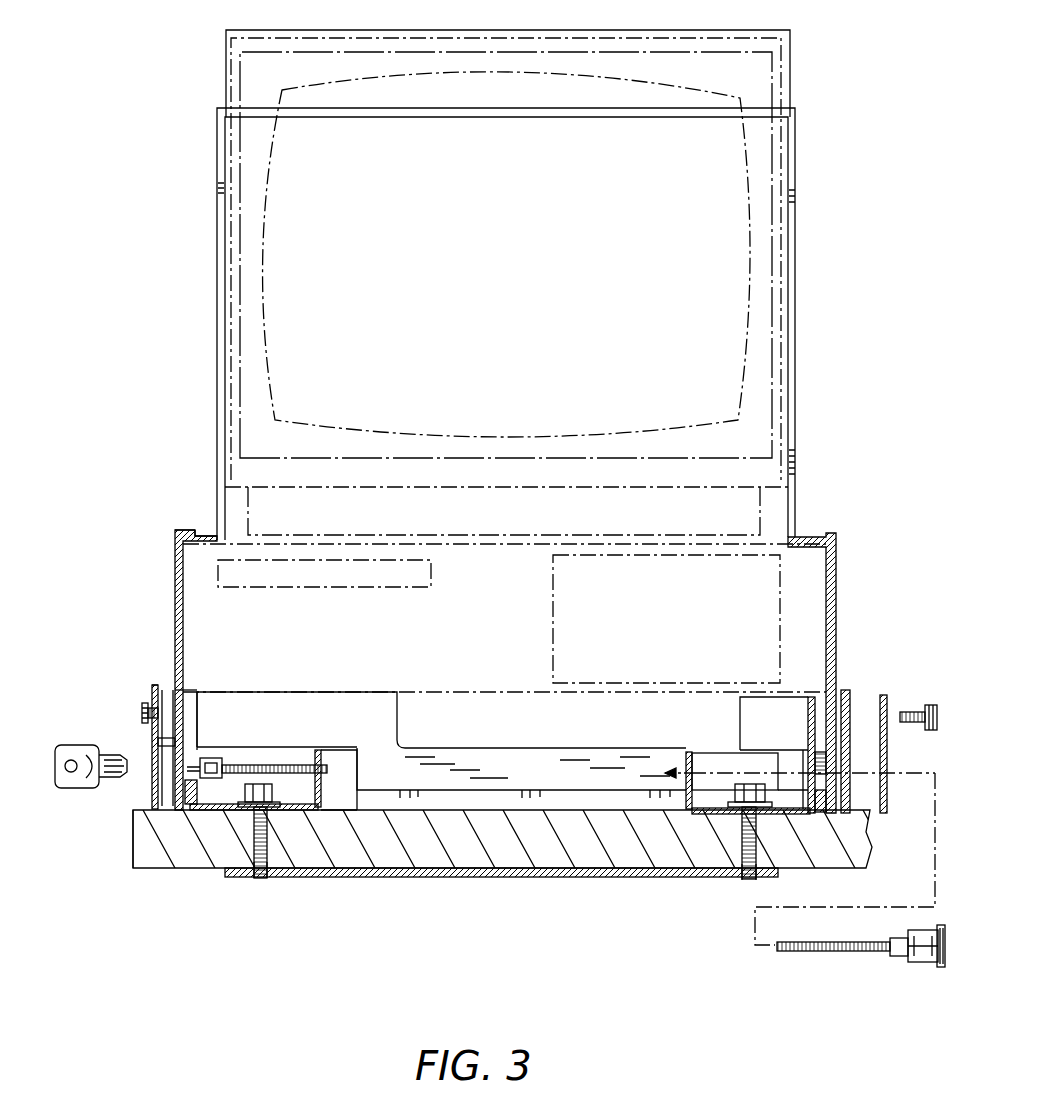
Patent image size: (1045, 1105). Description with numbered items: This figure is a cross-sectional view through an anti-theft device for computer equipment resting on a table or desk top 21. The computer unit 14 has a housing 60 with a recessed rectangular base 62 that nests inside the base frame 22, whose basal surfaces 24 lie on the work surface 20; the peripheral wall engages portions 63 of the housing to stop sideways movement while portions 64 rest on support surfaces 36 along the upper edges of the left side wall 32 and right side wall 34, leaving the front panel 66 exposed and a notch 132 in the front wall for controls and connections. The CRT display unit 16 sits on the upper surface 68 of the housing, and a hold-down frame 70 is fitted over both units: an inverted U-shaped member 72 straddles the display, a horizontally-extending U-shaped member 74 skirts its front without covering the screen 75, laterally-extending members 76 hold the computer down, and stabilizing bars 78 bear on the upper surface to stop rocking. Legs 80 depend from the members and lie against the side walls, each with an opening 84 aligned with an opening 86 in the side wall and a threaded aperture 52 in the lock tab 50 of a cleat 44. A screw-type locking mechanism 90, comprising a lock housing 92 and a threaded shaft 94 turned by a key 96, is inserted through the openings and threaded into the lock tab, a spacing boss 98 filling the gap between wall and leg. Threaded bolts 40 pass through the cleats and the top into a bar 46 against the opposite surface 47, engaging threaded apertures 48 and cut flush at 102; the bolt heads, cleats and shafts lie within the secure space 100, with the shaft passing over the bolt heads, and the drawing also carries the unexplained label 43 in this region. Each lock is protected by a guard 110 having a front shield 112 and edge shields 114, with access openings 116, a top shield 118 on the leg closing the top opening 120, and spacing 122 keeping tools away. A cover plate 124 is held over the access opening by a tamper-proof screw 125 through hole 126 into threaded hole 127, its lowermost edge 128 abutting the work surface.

The computer unit 14 is at (182, 619).
The CRT display unit 16 is at (790, 75).
The work surface 20 is at (567, 809).
The table or desk top 21 is at (130, 864).
The base frame 22 is at (850, 702).
The basal surfaces 24 is at (536, 814).
The left side wall 32 is at (150, 733).
The right side wall 34 is at (813, 816).
The support surfaces 36 is at (200, 692).
The threaded bolts 40 is at (270, 852).
The bracket 43 is at (212, 780).
The cleats 44 is at (290, 812).
The bar 46 is at (418, 875).
The opposite surface 47 is at (485, 874).
The threaded apertures 48 is at (264, 880).
The lock tab 50 is at (323, 757).
The threaded aperture 52 is at (357, 760).
The housing 60 is at (203, 597).
The recessed rectangular base 62 is at (348, 690).
The portions of housing 63 is at (185, 692).
The portions of housing 64 is at (200, 702).
The front panel 66 is at (483, 645).
The upper surface 68 is at (206, 530).
The hold-down frame 70 is at (792, 343).
The inverted U-shaped member 72 is at (795, 118).
The horizontally-extending U-shaped member 74 is at (793, 492).
The screen 75 is at (503, 278).
The laterally-extending members 76 is at (180, 523).
The stabilizing bars 78 is at (198, 530).
The legs 80 is at (175, 567).
The opening 84 is at (222, 762).
The opening 86 is at (200, 758).
The screw-type locking mechanism 90 is at (202, 790).
The lock housing 92 is at (150, 818).
The threaded shaft 94 is at (285, 763).
The key 96 is at (70, 788).
The spacing boss 98 is at (187, 800).
The secure space 100 is at (343, 797).
The flush cut location 102 is at (258, 877).
The guard 110 is at (152, 690).
The front shield 112 is at (883, 812).
The edge shields 114 is at (185, 690).
The access openings 116 is at (150, 777).
The top shield 118 is at (152, 687).
The top opening 120 is at (177, 686).
The spacing 122 is at (166, 742).
The cover plate 124 is at (150, 792).
The tamper-proof screw 125 is at (140, 712).
The hole 126 is at (887, 720).
The threaded hole 127 is at (853, 722).
The lowermost edge 128 is at (150, 812).
The notch 132 is at (525, 730).